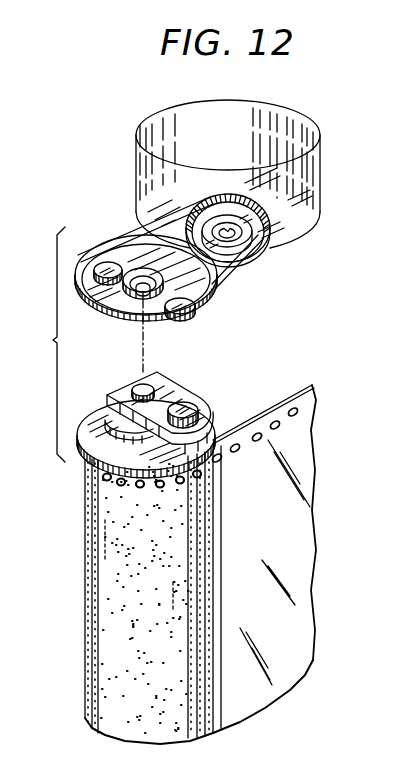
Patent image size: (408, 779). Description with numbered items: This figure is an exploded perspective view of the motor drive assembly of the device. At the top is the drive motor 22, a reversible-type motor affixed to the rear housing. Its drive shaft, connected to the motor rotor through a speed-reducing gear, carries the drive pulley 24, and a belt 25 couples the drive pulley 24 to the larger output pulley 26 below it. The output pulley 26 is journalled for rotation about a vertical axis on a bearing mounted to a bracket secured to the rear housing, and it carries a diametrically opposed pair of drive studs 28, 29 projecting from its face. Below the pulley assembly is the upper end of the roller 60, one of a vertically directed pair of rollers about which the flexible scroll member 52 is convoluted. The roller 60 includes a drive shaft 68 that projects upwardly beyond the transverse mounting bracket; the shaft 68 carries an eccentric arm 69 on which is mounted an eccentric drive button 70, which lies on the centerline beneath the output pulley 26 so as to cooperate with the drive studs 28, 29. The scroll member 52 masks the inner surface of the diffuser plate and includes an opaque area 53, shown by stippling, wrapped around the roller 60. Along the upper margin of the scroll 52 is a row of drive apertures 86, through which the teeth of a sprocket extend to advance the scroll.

The drive motor 22 is at (148, 142).
The drive pulley 24 is at (260, 236).
The belt 25 is at (131, 238).
The output pulley 26 is at (100, 240).
The drive stud 28 is at (192, 313).
The drive stud 29 is at (106, 278).
The scroll member 52 is at (283, 549).
The opaque area 53 is at (85, 677).
The roller 60 is at (103, 444).
The drive shaft 68 is at (133, 385).
The eccentric arm 69 is at (165, 392).
The eccentric drive button 70 is at (198, 400).
The drive apertures 86 is at (278, 415).